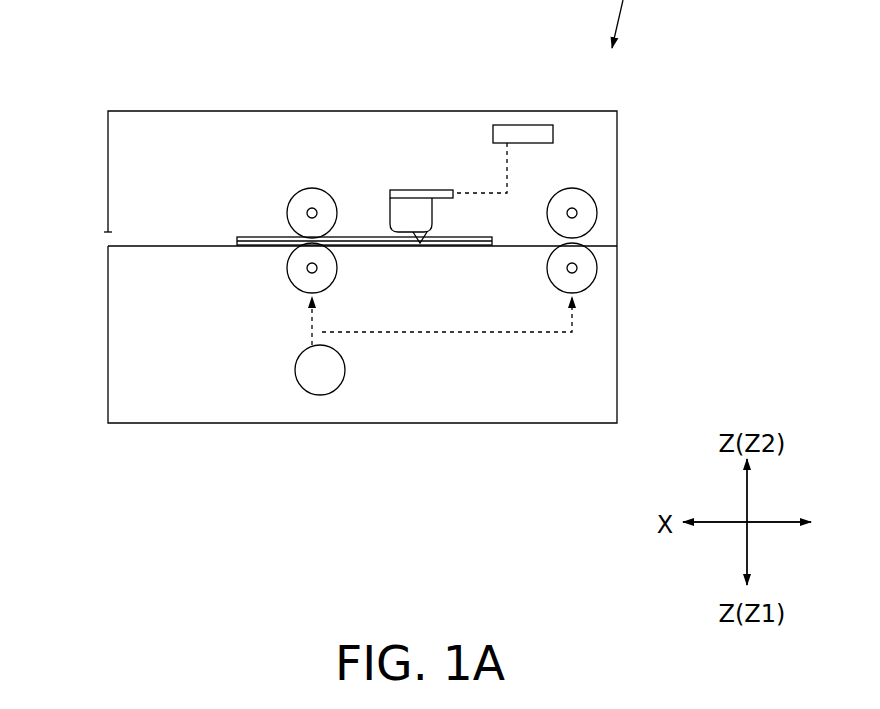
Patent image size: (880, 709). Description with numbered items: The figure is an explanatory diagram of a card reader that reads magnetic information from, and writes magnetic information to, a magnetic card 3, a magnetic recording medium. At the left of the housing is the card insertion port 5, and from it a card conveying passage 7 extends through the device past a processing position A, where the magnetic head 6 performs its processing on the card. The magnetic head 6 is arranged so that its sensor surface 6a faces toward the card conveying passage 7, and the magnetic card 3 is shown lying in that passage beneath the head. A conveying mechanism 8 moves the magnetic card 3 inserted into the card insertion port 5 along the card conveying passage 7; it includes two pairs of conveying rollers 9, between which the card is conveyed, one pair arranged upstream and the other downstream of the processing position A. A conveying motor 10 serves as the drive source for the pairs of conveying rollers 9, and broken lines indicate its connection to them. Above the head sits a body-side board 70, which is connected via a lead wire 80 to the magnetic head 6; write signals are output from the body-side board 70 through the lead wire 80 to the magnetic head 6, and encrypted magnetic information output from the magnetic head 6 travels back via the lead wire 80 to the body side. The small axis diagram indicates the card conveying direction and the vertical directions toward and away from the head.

The magnetic card 3 is at (357, 238).
The card insertion port 5 is at (107, 240).
The magnetic head 6 is at (411, 187).
The sensor surface 6a is at (421, 242).
The card conveying passage 7 is at (600, 243).
The conveying mechanism 8 is at (485, 350).
The conveying rollers 9 is at (280, 259).
The conveying motor 10 is at (318, 396).
The body-side board 70 is at (522, 125).
The lead wire 80 is at (507, 168).
The processing position A is at (409, 247).